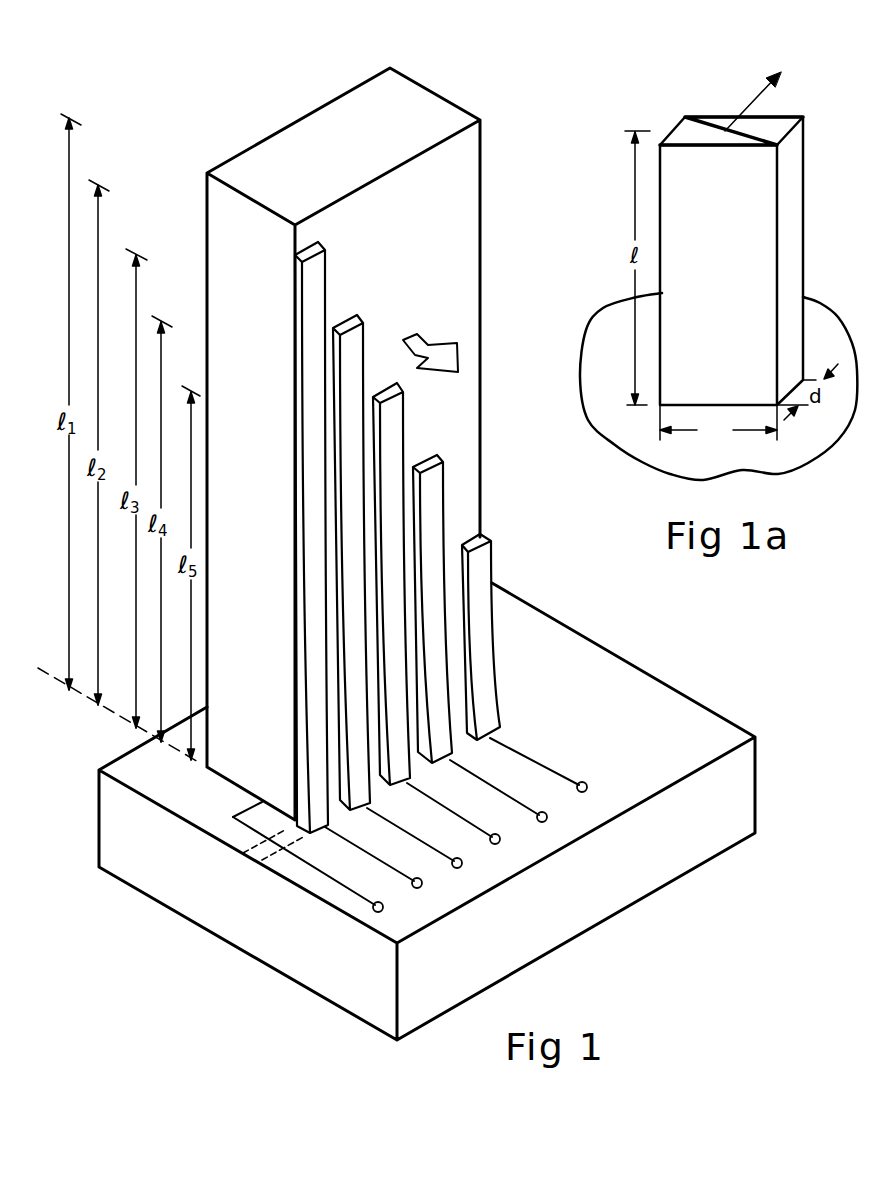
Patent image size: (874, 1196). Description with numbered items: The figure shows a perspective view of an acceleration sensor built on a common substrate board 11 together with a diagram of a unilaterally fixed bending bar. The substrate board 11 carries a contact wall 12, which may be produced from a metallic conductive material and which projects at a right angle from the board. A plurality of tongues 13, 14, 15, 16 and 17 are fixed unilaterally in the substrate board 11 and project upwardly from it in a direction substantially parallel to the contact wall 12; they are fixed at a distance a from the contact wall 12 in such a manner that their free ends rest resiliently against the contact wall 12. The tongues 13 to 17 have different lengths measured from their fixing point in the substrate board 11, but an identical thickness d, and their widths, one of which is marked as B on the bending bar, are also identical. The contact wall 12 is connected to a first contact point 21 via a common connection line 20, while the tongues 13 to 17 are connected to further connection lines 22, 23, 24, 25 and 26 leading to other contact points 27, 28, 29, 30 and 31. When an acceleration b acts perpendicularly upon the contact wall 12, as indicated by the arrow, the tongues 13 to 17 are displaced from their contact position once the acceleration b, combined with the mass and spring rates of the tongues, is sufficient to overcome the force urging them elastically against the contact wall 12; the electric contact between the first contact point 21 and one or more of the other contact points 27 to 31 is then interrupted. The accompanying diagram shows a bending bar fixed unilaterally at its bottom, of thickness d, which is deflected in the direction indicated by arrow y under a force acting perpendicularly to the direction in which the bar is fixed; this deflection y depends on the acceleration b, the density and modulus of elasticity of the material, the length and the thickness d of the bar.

In FIG. 1, the substrate board 11 is at (743, 811).
In FIG. 1, the contact wall 12 is at (402, 100).
In FIG. 1, the tongue 13 is at (315, 278).
In FIG. 1, the tongue 14 is at (357, 340).
In FIG. 1, the tongue 15 is at (398, 438).
In FIG. 1, the tongue 16 is at (438, 490).
In FIG. 1, the tongue 17 is at (480, 567).
In FIG. 1, the common connection line 20 is at (349, 871).
In FIG. 1, the first contact point 21 is at (384, 907).
In FIG. 1, the connection line 22 is at (392, 852).
In FIG. 1, the connection line 23 is at (429, 831).
In FIG. 1, the connection line 24 is at (471, 803).
In FIG. 1, the connection line 25 is at (506, 775).
In FIG. 1, the connection line 26 is at (534, 752).
In FIG. 1, the contact point 27 is at (423, 884).
In FIG. 1, the contact point 28 is at (463, 863).
In FIG. 1, the contact point 29 is at (501, 840).
In FIG. 1, the contact point 30 is at (548, 815).
In FIG. 1, the contact point 31 is at (588, 786).
In FIG. 1, the distance a is at (245, 853).
In FIG. 1, the acceleration b is at (432, 339).
In FIG. 1, the thickness d is at (262, 860).
In FIG. 1A, the plate width B is at (718, 424).
In FIG. 1A, the deflection y is at (762, 87).